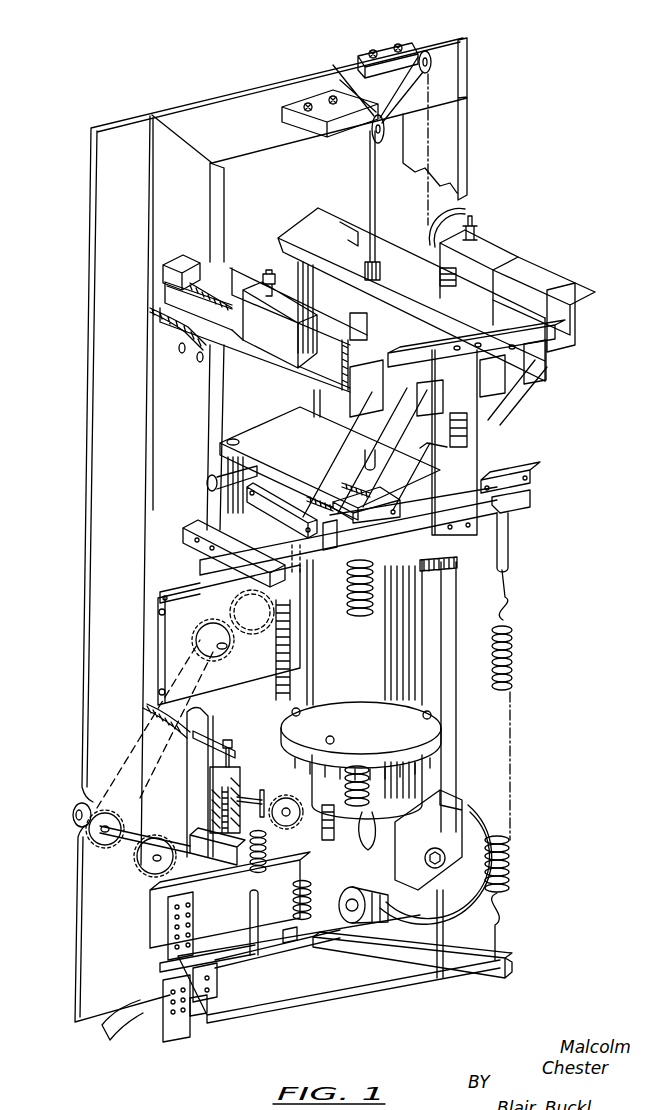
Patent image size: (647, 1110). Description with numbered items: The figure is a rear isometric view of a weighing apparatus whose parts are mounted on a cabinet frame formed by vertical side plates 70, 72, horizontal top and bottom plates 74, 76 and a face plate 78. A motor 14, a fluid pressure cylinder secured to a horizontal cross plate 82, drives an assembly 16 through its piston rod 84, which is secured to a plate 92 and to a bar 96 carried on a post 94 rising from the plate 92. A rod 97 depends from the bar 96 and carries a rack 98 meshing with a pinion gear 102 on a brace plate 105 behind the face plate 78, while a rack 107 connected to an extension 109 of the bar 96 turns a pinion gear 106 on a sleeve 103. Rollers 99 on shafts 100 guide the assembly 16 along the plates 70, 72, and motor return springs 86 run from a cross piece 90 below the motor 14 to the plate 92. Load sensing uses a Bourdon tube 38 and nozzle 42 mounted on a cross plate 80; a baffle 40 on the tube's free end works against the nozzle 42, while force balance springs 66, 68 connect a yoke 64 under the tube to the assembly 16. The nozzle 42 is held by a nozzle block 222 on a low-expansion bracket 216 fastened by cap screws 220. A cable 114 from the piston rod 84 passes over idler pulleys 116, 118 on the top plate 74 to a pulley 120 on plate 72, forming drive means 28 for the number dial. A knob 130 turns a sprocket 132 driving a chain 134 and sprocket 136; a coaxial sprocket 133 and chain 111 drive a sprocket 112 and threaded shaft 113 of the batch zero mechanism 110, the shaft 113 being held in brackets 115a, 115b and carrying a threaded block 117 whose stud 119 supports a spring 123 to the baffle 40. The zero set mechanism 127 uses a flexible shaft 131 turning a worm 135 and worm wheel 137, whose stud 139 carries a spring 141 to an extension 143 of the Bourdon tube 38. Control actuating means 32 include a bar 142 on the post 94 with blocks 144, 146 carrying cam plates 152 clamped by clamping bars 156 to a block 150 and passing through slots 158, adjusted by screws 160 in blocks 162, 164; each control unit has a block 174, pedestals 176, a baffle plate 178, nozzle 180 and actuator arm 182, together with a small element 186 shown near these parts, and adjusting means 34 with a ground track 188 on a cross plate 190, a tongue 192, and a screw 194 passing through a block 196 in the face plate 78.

The motor 14 is at (342, 690).
The assembly 16 is at (513, 417).
The drive means 28 is at (384, 44).
The means for actuating control device 32 is at (546, 258).
The adjusting means 34 is at (160, 323).
The Bourdon tube 38 is at (503, 820).
The baffle 40 is at (173, 972).
The nozzle 42 is at (217, 973).
The yoke 64 is at (480, 975).
The force balance spring 66 is at (513, 658).
The force balance spring 68 is at (247, 573).
The vertical side plate 70 is at (187, 1020).
The vertical side plate 72 is at (468, 152).
The top plate 74 is at (220, 132).
The bottom plate 76 is at (373, 990).
The face plate 78 is at (120, 125).
The cross plate 80 is at (148, 927).
The cross plate 82 is at (213, 545).
The piston rod 84 is at (378, 457).
The motor return spring 86 is at (365, 612).
The cross piece 90 is at (368, 813).
The plate 92 is at (261, 468).
The post 94 is at (469, 487).
The bar 96 is at (394, 308).
The rod 97 is at (253, 436).
The rack 98 is at (287, 672).
The roller 99 is at (207, 477).
The shaft 100 is at (273, 510).
The pinion gear 102 is at (277, 638).
The sleeve 103 is at (233, 613).
The brace plate 105 is at (170, 650).
The pinion gear 106 is at (264, 559).
The rack 107 is at (302, 557).
The extension 109 is at (337, 220).
The batch zero mechanism 110 is at (203, 773).
The chain 111 is at (183, 833).
The sprocket 112 is at (243, 890).
The threaded shaft 113 is at (210, 800).
The cable 114 is at (370, 181).
The bracket 115a is at (217, 735).
The bracket 115b is at (198, 829).
The idler pulley 116 is at (338, 70).
The threaded block 117 is at (245, 762).
The idler pulley 118 is at (424, 50).
The stud 119 is at (252, 790).
The pulley 120 is at (462, 217).
The spring 123 is at (250, 903).
The zero set mechanism 127 is at (320, 880).
The knob 130 is at (76, 810).
The flexible shaft 131 is at (310, 860).
The sprocket 132 is at (88, 840).
The sprocket 133 is at (135, 860).
The chain 134 is at (142, 743).
The worm 135 is at (322, 822).
The sprocket 136 is at (200, 630).
The worm wheel 137 is at (286, 796).
The stud 139 is at (300, 872).
The spring 141 is at (252, 940).
The bar 142 is at (572, 329).
The extension 143 is at (340, 930).
The block 144 is at (575, 367).
The block 146 is at (411, 373).
The block 150 is at (336, 527).
The cam plate 152 is at (535, 366).
The clamping bar 156 is at (290, 520).
The slot 158 is at (497, 502).
The screw 160 is at (487, 453).
The block 162 is at (383, 494).
The block 164 is at (522, 466).
The block 174 is at (282, 332).
The pedestal 176 is at (572, 315).
The baffle plate 178 is at (497, 247).
The nozzle 180 is at (473, 257).
The actuator arm 182 is at (547, 293).
The spring 186 is at (182, 352).
The ground track 188 is at (168, 297).
The cross plate 190 is at (243, 373).
The tongue 192 is at (438, 373).
The screw 194 is at (210, 297).
The block 196 is at (186, 255).
The bracket 216 is at (178, 1003).
The cap screw 220 is at (188, 925).
The nozzle block 222 is at (217, 1003).